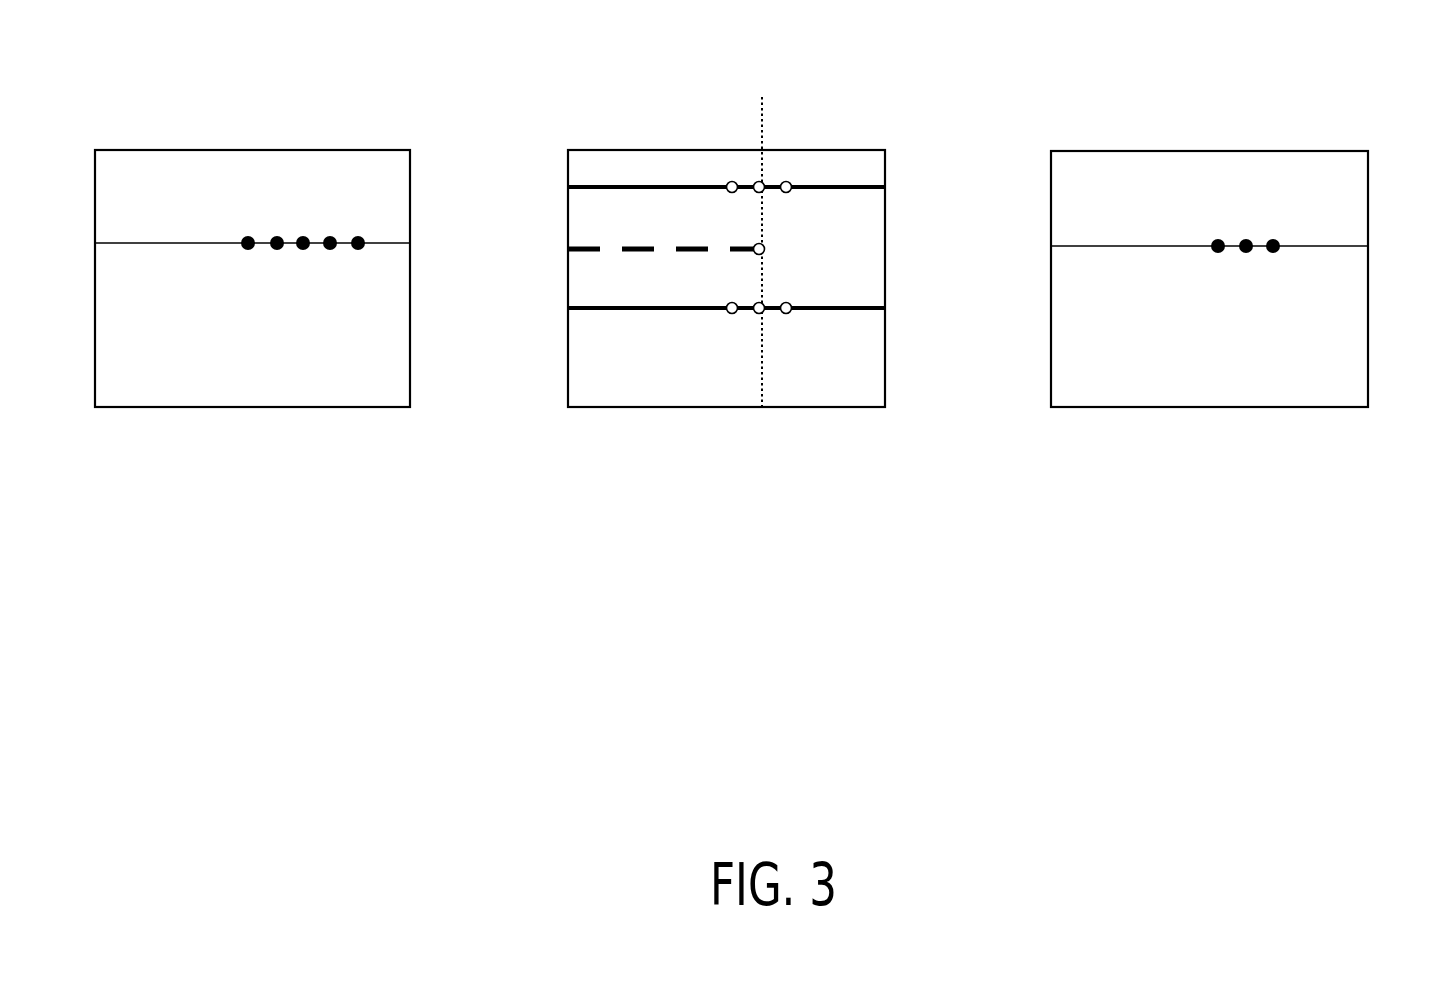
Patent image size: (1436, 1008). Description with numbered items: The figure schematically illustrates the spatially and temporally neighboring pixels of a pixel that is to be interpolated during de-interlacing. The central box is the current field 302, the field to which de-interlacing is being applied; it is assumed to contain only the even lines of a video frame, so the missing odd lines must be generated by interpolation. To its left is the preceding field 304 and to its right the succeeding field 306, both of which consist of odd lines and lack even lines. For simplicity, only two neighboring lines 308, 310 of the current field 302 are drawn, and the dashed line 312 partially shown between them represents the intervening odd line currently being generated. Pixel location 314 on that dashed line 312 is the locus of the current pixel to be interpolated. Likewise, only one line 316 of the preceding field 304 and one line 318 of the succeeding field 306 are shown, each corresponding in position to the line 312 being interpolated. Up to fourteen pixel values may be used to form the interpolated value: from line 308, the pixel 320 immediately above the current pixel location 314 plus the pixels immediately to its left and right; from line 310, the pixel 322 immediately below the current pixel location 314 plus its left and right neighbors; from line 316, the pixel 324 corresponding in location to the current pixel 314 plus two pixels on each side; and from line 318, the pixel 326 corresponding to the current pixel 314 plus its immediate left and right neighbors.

The current field 302 is at (672, 407).
The preceding field 304 is at (228, 407).
The succeeding field 306 is at (1156, 407).
The line of current field 308 is at (842, 187).
The line of current field 310 is at (860, 310).
The dashed line 312 is at (582, 247).
The pixel location 314 is at (759, 255).
The line of preceding field 316 is at (126, 243).
The line of succeeding field 318 is at (1343, 248).
The pixel 320 is at (757, 186).
The pixel 322 is at (757, 313).
The pixel 324 is at (302, 247).
The pixel 326 is at (1246, 251).